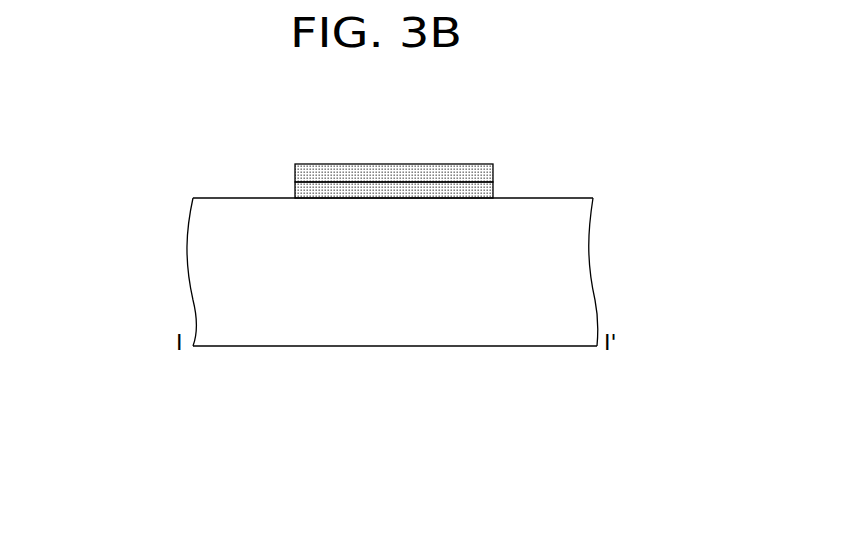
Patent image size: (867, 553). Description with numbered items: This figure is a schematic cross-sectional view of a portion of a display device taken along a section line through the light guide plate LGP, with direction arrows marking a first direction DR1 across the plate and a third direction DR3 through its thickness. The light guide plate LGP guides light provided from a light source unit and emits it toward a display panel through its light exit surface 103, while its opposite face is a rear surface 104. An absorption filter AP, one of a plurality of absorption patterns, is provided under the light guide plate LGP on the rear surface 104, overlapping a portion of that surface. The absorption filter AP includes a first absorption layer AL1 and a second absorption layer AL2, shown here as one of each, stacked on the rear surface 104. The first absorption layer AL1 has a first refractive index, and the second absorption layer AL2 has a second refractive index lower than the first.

The light guide plate LGP is at (580, 271).
The rear surface 104 is at (573, 198).
The light exit surface 103 is at (573, 346).
The absorption filter AP is at (331, 166).
The first absorption layer AL1 is at (296, 190).
The second absorption layer AL2 is at (296, 172).
The first direction DR1 is at (57, 298).
The third direction DR3 is at (57, 298).